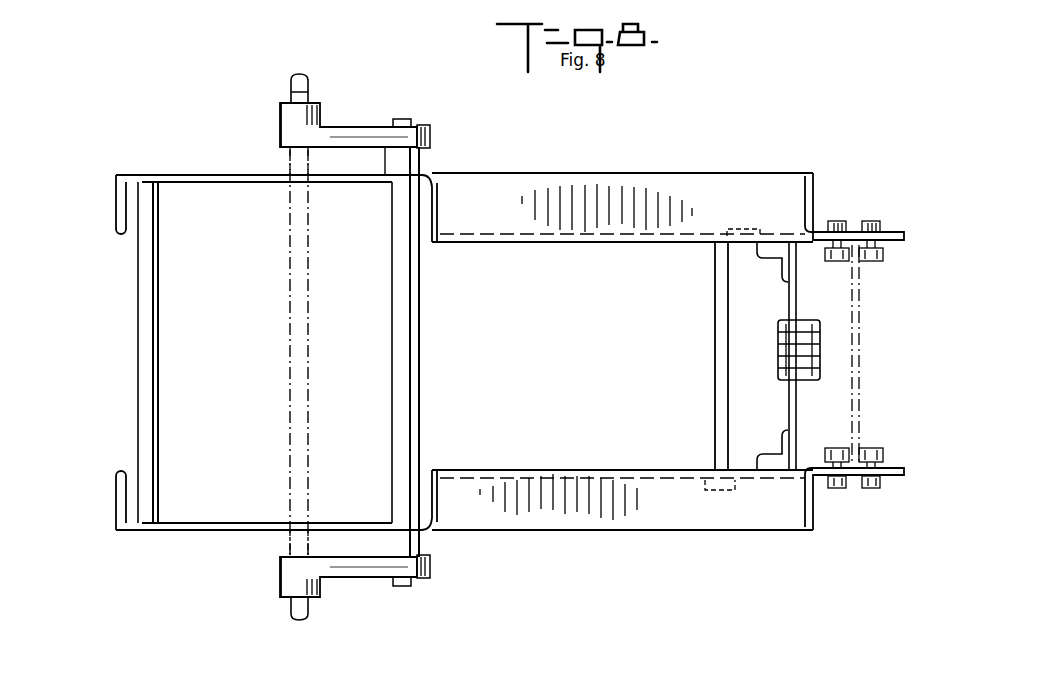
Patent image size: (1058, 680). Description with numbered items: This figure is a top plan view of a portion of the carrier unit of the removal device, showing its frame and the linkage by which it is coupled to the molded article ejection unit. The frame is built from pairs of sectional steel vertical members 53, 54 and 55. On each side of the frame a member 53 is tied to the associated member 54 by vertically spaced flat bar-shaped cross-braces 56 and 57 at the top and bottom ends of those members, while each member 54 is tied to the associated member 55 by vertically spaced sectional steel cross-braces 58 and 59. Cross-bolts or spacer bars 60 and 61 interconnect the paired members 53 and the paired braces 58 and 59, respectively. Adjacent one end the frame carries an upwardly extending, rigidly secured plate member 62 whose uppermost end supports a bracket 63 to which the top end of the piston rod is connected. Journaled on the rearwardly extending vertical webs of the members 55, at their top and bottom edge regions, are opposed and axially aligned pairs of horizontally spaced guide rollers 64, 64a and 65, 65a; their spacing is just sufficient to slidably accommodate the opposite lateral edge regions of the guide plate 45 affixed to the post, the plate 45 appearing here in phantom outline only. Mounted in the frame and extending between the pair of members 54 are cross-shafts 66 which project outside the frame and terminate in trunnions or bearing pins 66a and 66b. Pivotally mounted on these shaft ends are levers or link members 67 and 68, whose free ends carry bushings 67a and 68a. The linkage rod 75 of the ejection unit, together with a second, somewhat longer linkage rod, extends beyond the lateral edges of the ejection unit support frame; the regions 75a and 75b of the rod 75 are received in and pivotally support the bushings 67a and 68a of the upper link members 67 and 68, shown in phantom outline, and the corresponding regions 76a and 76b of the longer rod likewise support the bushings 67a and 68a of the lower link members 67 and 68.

The guide plate 45 is at (860, 362).
The vertical member 53 is at (118, 184).
The vertical member 54 is at (430, 185).
The vertical member 55 is at (813, 190).
The cross-brace 56 is at (216, 184).
The cross-brace 57 is at (214, 522).
The cross-brace 58 is at (596, 476).
The cross-brace 59 is at (544, 186).
The cross-bolt or spacer bar 60 is at (146, 318).
The cross-bolt or spacer bar 61 is at (714, 297).
The plate member 62 is at (790, 297).
The bracket 63 is at (782, 382).
The guide roller 64 is at (826, 448).
The guide roller 64a is at (883, 455).
The guide roller 65 is at (836, 262).
The guide roller 65a is at (874, 262).
The cross-shaft 66 is at (412, 340).
The trunnion or bearing pin 66a is at (410, 587).
The trunnion or bearing pin 66b is at (411, 119).
The lever or link member 67 is at (350, 577).
The bushing 67a is at (281, 584).
The lever or link member 68 is at (343, 127).
The bushing 68a is at (281, 126).
The linkage rod 75 is at (290, 331).
The rod region 75a is at (290, 540).
The rod region 75b is at (308, 160).
The rod region 76a is at (290, 612).
The rod region 76b is at (290, 85).